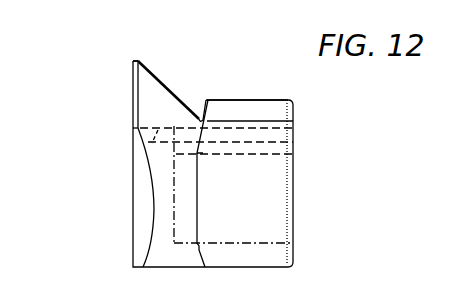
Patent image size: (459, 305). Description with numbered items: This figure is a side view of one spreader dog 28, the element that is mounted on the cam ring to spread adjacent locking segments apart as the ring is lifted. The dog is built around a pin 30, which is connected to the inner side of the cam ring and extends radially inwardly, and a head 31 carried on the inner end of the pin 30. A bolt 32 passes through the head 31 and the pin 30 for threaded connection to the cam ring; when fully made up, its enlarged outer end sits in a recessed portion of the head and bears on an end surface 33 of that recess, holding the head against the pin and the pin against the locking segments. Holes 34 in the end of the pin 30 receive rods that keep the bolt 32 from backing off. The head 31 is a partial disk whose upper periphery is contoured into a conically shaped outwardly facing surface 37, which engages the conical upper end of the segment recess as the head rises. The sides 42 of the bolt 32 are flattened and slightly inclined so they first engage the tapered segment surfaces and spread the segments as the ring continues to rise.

The spreader dog 28 is at (139, 61).
The conically shaped outwardly facing surface 37 is at (168, 90).
The pin 30 is at (252, 100).
The holes 34 is at (283, 131).
The sides of the bolt 42 is at (265, 213).
The head 31 is at (137, 247).
The end surface 33 is at (174, 182).
The bolt 32 is at (133, 143).